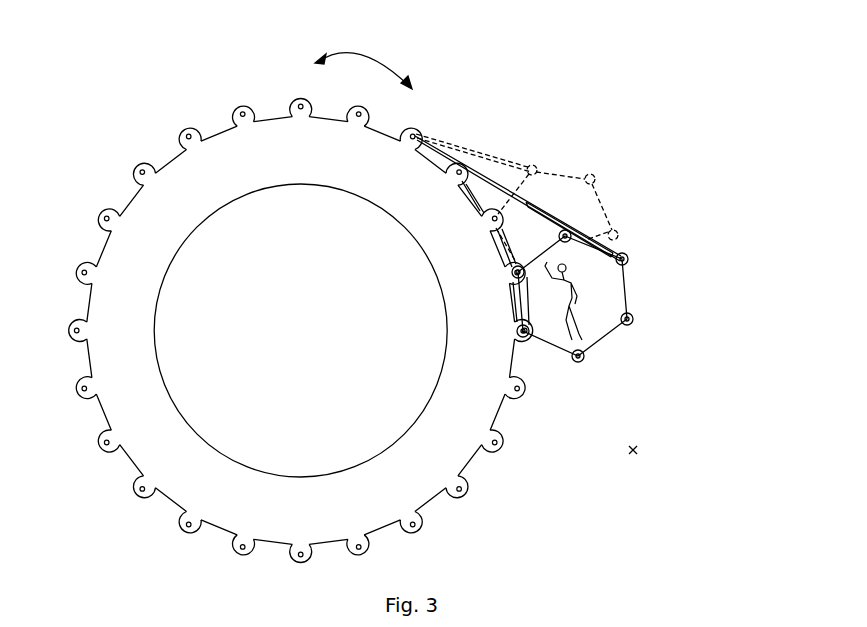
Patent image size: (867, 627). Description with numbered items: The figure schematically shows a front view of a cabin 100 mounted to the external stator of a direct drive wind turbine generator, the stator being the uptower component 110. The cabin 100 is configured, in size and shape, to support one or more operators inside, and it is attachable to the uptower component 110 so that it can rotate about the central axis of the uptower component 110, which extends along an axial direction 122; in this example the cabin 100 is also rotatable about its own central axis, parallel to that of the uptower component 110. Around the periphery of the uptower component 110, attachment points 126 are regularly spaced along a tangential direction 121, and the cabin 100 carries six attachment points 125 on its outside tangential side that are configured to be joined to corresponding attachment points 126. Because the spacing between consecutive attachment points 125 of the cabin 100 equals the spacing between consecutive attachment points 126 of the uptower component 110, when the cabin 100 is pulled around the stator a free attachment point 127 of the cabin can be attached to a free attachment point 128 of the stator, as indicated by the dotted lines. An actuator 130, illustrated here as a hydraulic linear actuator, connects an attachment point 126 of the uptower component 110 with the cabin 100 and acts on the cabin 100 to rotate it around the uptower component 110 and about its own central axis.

The uptower component 110 is at (272, 113).
The tangential direction 121 is at (397, 68).
The attachment points 126 is at (117, 208).
The free attachment point 128 is at (486, 203).
The free attachment point 127 is at (555, 222).
The actuator 130 is at (587, 231).
The cabin 100 is at (620, 287).
The attachment points 125 is at (585, 351).
The axial direction 122 is at (640, 446).